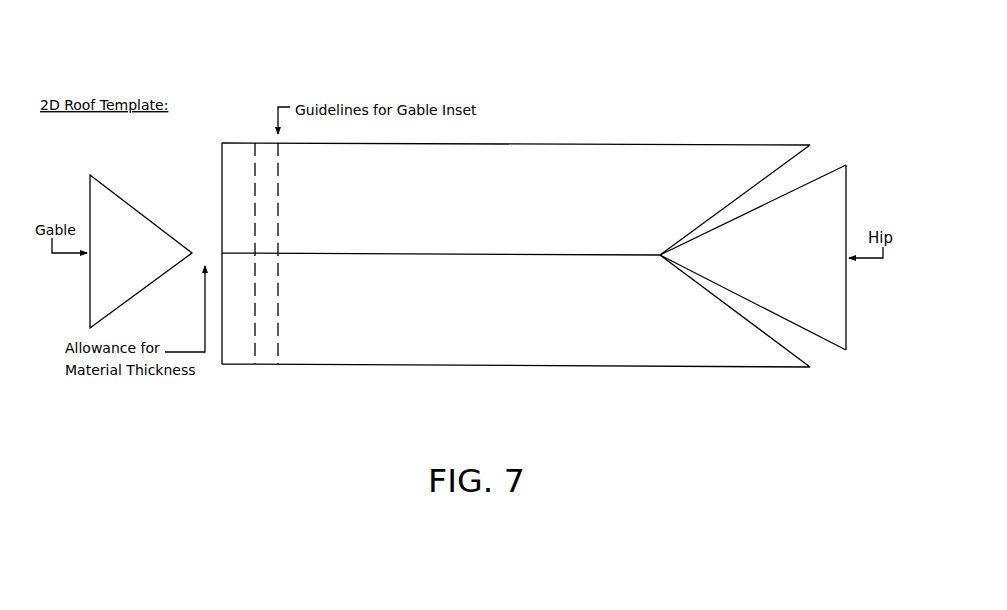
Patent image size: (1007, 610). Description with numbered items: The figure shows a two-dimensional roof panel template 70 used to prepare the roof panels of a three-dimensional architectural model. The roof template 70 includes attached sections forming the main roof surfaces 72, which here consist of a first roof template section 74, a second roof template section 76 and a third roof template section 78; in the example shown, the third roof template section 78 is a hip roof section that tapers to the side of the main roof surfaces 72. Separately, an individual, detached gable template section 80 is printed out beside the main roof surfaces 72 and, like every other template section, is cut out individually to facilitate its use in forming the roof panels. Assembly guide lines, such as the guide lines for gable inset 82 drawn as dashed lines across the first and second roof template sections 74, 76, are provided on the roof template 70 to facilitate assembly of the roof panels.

The two-dimensional roof panel template 70 is at (784, 51).
The main roof surfaces 72 is at (850, 181).
The first roof template section 74 is at (516, 310).
The second roof template section 76 is at (516, 199).
The third roof template section 78 is at (753, 257).
The gable template section 80 is at (147, 220).
The guide lines for gable inset 82 is at (278, 364).